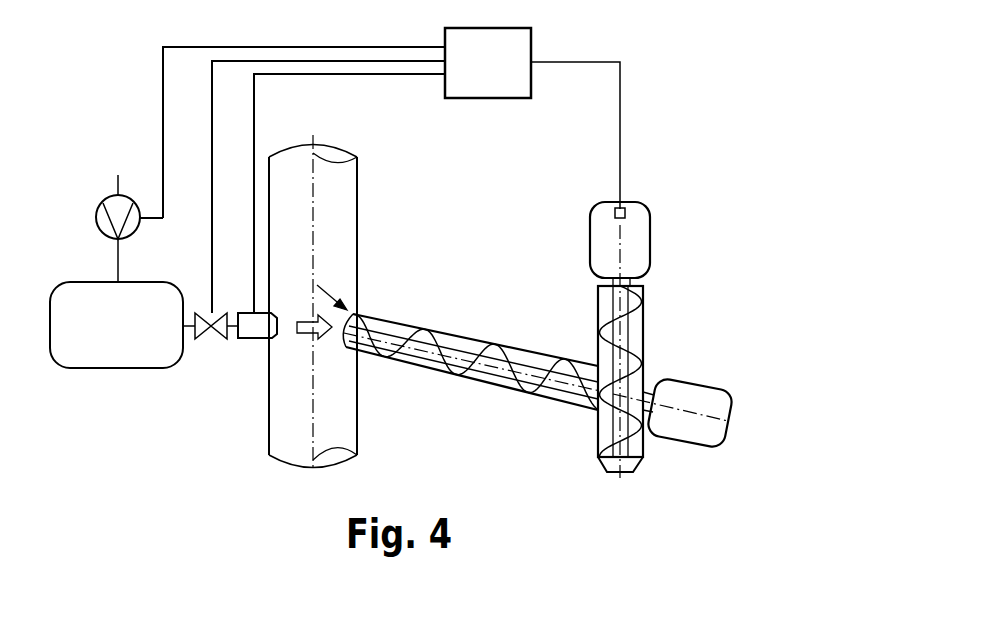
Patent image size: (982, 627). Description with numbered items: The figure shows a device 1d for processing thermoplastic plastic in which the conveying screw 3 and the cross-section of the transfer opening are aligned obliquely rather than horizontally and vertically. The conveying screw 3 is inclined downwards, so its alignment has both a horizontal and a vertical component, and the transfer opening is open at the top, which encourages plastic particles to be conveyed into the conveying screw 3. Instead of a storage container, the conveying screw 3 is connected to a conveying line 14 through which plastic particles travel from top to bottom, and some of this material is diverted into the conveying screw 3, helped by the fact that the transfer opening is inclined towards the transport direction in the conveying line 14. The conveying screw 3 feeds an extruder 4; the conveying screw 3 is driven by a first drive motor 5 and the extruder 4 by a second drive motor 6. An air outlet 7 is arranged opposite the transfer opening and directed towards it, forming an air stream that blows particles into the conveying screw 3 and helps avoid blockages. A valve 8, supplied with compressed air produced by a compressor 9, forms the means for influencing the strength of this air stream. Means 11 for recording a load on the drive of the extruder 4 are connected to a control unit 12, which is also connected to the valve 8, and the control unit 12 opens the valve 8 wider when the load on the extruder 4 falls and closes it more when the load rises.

The device 1d is at (752, 30).
The conveying screw 3 is at (463, 343).
The extruder 4 is at (633, 447).
The first drive motor 5 is at (698, 403).
The second drive motor 6 is at (642, 240).
The air outlet 7 is at (258, 329).
The valve 8 is at (217, 336).
The compressor 9 is at (105, 225).
The means for recording a load 11 is at (625, 213).
The control unit 12 is at (522, 52).
The conveying line 14 is at (347, 195).